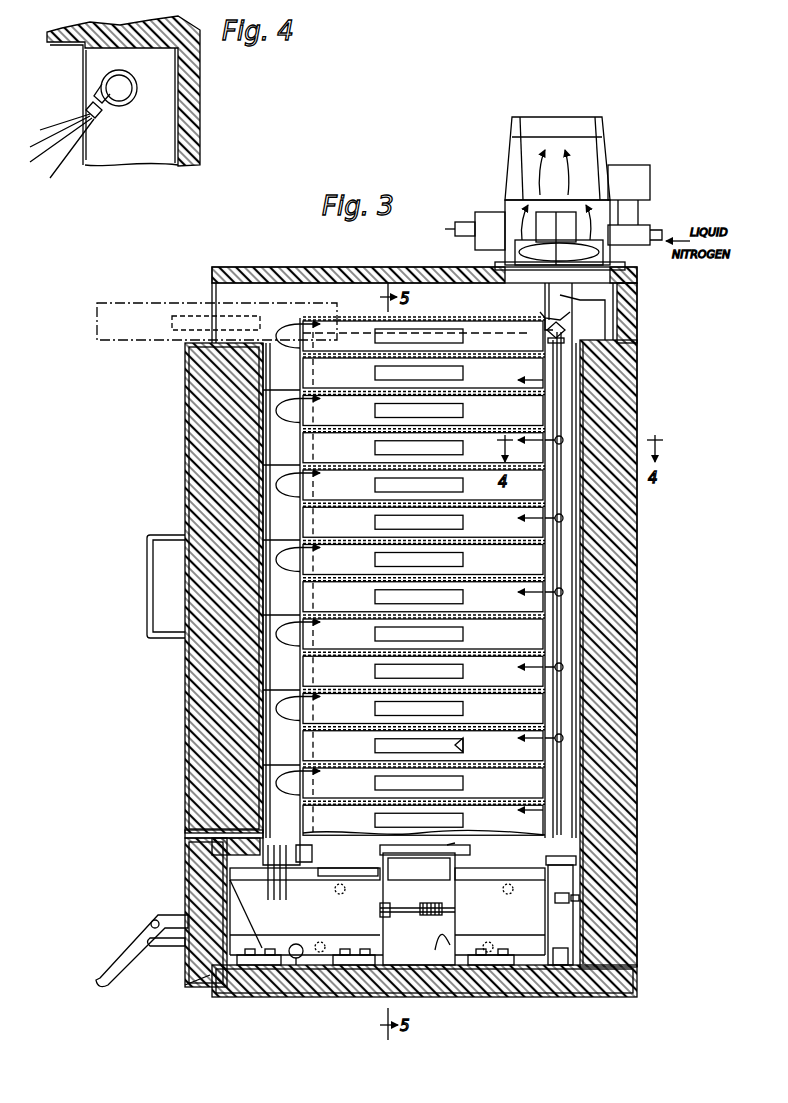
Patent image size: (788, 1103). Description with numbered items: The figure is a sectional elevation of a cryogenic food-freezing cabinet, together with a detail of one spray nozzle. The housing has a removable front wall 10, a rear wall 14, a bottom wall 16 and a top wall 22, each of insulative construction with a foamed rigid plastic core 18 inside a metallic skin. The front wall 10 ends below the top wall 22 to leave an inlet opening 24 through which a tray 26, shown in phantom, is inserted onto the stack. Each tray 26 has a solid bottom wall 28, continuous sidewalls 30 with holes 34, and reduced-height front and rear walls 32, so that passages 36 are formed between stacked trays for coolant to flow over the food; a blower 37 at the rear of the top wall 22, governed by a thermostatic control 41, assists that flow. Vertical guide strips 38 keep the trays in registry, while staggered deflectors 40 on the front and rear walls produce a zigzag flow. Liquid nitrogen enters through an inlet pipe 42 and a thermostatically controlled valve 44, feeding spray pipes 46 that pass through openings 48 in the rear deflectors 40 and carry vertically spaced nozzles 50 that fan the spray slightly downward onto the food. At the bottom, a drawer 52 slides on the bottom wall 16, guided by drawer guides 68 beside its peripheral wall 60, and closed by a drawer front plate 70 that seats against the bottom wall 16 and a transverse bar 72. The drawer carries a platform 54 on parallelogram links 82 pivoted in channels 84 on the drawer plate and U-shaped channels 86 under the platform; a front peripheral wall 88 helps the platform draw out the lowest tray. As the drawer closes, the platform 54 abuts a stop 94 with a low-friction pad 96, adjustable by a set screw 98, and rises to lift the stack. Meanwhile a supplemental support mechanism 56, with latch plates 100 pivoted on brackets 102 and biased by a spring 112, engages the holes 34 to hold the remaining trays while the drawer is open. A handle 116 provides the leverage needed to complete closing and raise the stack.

In FIG. 3, the front wall 10 is at (183, 668).
In FIG. 3, the rear wall 14 is at (640, 543).
In FIG. 3, the bottom wall 16 is at (420, 1000).
In FIG. 4, the foamed rigid plastic core 18 is at (196, 92).
In FIG. 3, the foamed rigid plastic core 18 is at (620, 360).
In FIG. 3, the top wall 22 is at (404, 265).
In FIG. 3, the inlet opening 24 is at (208, 292).
In FIG. 3, the tray 26 is at (97, 333).
In FIG. 3, the bottom wall of tray 28 is at (318, 760).
In FIG. 3, the tray sidewalls 30 is at (380, 712).
In FIG. 3, the front and rear walls of tray 32 is at (315, 712).
In FIG. 3, the holes 34 is at (463, 770).
In FIG. 3, the passages 36 is at (305, 670).
In FIG. 3, the blower 37 is at (508, 148).
In FIG. 4, the guide strips 38 is at (83, 70).
In FIG. 3, the guide strips 38 is at (305, 416).
In FIG. 4, the deflectors 40 is at (105, 155).
In FIG. 3, the deflectors 40 is at (300, 496).
In FIG. 3, the thermostatic control 41 is at (620, 300).
In FIG. 3, the inlet pipe 42 is at (600, 328).
In FIG. 3, the thermostatically controlled valve 44 is at (650, 178).
In FIG. 4, the spray pipes 46 is at (127, 105).
In FIG. 3, the spray pipes 46 is at (560, 388).
In FIG. 4, the openings 48 is at (95, 82).
In FIG. 4, the nozzles 50 is at (88, 106).
In FIG. 3, the nozzles 50 is at (580, 595).
In FIG. 3, the drawer 52 is at (183, 890).
In FIG. 3, the platform 54 is at (308, 890).
In FIG. 3, the supplemental support mechanism 56 is at (430, 965).
In FIG. 3, the peripheral wall 60 is at (296, 1000).
In FIG. 3, the drawer guides 68 is at (268, 968).
In FIG. 3, the drawer front plate 70 is at (183, 972).
In FIG. 3, the transverse bar 72 is at (203, 812).
In FIG. 3, the parallelogram links 82 is at (338, 896).
In FIG. 3, the channels 84 is at (348, 945).
In FIG. 3, the U-shaped channels 86 is at (478, 890).
In FIG. 3, the front peripheral wall 88 is at (230, 866).
In FIG. 3, the stop 94 is at (565, 928).
In FIG. 3, the pad 96 is at (560, 880).
In FIG. 3, the set screw 98 is at (580, 900).
In FIG. 3, the latch plates 100 is at (445, 866).
In FIG. 3, the brackets 102 is at (462, 975).
In FIG. 3, the spring 112 is at (450, 898).
In FIG. 3, the handle 116 is at (100, 972).